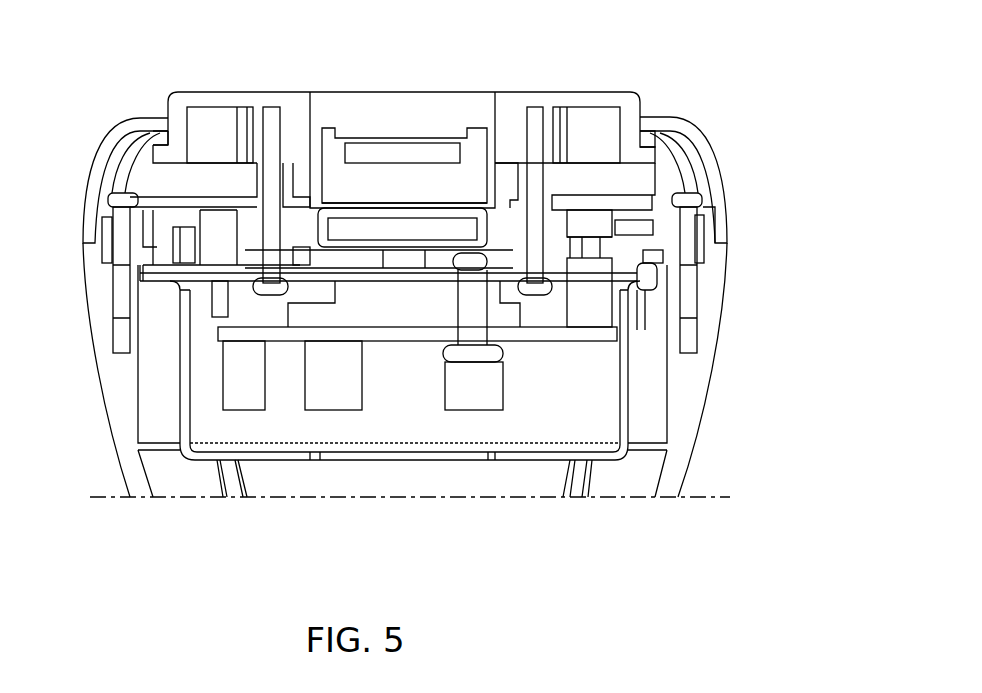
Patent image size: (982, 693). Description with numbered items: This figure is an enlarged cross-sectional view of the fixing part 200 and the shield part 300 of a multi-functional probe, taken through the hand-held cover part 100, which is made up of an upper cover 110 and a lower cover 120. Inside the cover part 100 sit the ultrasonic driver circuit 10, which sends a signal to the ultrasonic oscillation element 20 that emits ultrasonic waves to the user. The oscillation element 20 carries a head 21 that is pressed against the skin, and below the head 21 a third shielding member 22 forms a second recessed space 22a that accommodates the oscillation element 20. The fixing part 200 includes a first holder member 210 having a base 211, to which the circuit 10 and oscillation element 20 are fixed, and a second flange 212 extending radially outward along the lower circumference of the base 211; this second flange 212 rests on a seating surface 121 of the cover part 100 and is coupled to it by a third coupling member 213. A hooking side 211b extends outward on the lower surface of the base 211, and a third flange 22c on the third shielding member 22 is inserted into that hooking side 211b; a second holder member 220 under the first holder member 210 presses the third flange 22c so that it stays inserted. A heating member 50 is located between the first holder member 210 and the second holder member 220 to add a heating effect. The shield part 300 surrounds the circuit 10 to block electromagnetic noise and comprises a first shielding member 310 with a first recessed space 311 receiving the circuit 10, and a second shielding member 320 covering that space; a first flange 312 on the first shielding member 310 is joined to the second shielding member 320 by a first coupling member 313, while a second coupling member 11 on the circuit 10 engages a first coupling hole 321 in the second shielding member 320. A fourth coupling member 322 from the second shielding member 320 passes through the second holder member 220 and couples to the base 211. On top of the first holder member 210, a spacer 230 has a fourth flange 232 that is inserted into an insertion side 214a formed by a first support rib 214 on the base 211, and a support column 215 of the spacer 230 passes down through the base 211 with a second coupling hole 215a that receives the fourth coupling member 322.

The ultrasonic driver circuit 10 is at (398, 335).
The second coupling member 11 is at (503, 355).
The ultrasonic oscillation element 20 is at (390, 160).
The head 21 is at (350, 92).
The third shielding member 22 is at (480, 130).
The second recessed space 22a is at (428, 183).
The third flange 22c is at (300, 195).
The heating member 50 is at (135, 220).
The cover part 100 is at (416, 327).
The upper cover 110 is at (695, 118).
The lower cover 120 is at (690, 412).
The seating surface 121 is at (707, 247).
The fixing part 200 is at (445, 332).
The first holder member 210 is at (815, 231).
The base 211 is at (650, 180).
The hooking side 211b is at (505, 200).
The second flange 212 is at (715, 225).
The third coupling member 213 is at (660, 275).
The first support rib 214 is at (155, 130).
The insertion side 214a is at (152, 153).
The support column 215 is at (255, 185).
The second coupling hole 215a is at (270, 130).
The second holder member 220 is at (250, 245).
The spacer 230 is at (218, 97).
The fourth flange 232 is at (646, 150).
The shield part 300 is at (407, 436).
The first shielding member 310 is at (600, 463).
The first recessed space 311 is at (562, 422).
The first flange 312 is at (660, 285).
The first coupling member 313 is at (665, 300).
The second shielding member 320 is at (322, 305).
The first coupling hole 321 is at (470, 258).
The fourth coupling member 322 is at (225, 270).